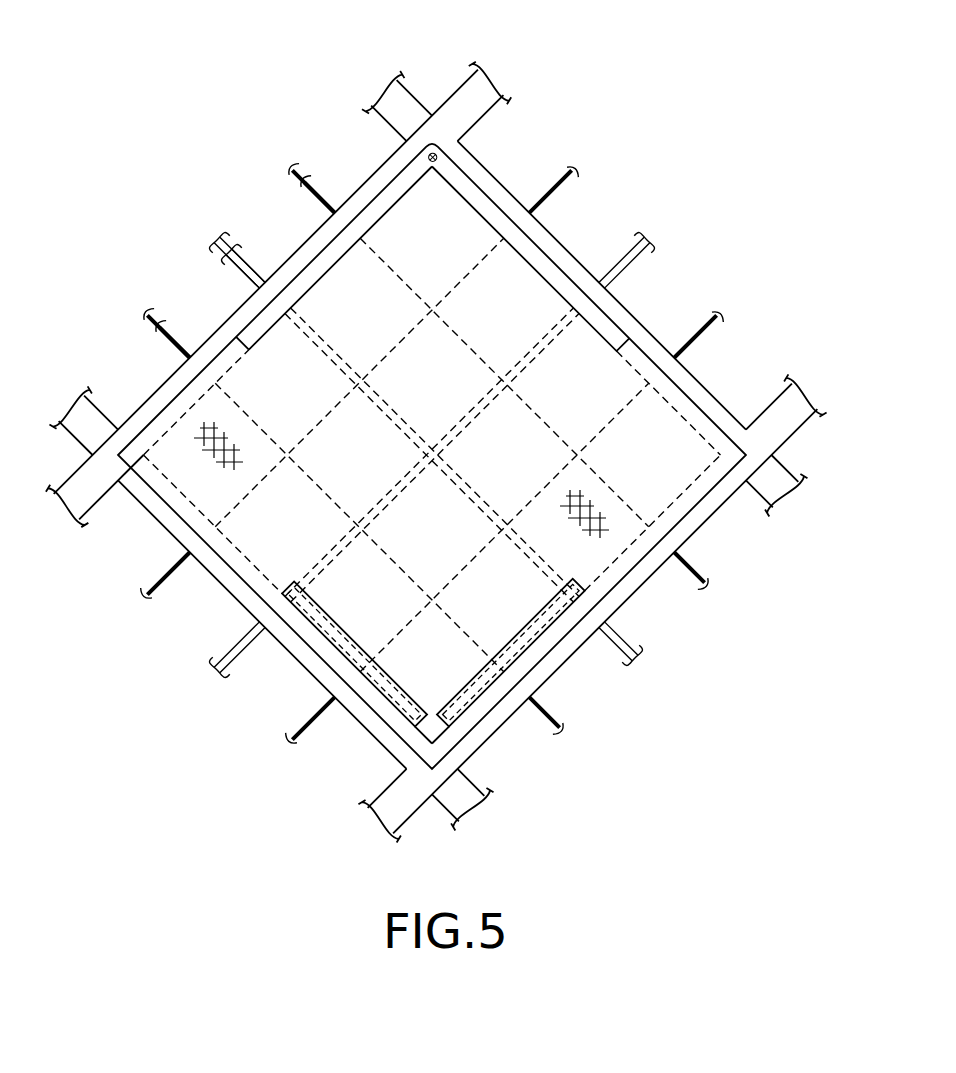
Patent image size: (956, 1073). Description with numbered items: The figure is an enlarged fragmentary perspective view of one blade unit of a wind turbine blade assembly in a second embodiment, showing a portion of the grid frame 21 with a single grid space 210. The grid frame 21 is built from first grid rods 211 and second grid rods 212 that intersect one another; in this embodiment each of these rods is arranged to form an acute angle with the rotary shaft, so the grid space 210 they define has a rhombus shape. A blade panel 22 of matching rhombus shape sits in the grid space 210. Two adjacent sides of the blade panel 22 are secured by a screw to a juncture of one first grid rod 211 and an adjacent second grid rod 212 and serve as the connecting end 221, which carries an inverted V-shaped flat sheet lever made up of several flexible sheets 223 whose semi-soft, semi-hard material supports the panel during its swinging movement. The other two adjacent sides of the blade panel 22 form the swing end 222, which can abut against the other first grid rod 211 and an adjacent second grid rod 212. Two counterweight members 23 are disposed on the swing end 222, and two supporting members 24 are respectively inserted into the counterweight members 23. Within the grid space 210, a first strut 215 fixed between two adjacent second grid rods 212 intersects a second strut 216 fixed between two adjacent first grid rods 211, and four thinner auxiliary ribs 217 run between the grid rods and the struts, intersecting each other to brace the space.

The grid frame 21 is at (456, 86).
The grid space 210 is at (167, 481).
The first grid rods 211 is at (357, 187).
The second grid rods 212 is at (620, 305).
The first strut 215 is at (534, 345).
The second strut 216 is at (530, 562).
The auxiliary ribs 217 is at (534, 345).
The blade panel 22 is at (660, 437).
The connecting end 221 is at (388, 192).
The swing end 222 is at (372, 742).
The flexible sheets 223 is at (300, 246).
The counterweight members 23 is at (305, 627).
The supporting members 24 is at (317, 667).